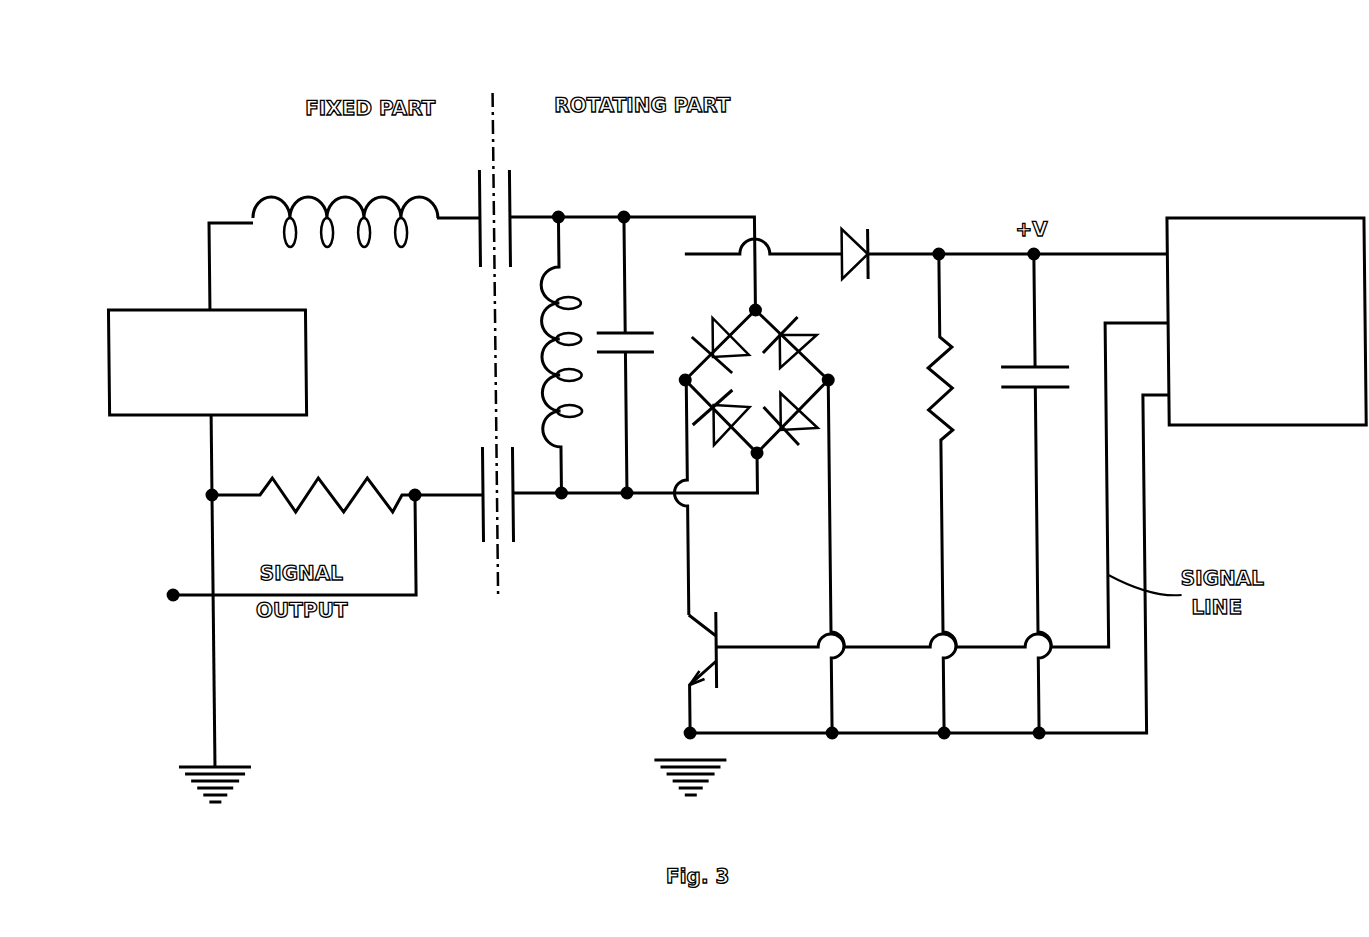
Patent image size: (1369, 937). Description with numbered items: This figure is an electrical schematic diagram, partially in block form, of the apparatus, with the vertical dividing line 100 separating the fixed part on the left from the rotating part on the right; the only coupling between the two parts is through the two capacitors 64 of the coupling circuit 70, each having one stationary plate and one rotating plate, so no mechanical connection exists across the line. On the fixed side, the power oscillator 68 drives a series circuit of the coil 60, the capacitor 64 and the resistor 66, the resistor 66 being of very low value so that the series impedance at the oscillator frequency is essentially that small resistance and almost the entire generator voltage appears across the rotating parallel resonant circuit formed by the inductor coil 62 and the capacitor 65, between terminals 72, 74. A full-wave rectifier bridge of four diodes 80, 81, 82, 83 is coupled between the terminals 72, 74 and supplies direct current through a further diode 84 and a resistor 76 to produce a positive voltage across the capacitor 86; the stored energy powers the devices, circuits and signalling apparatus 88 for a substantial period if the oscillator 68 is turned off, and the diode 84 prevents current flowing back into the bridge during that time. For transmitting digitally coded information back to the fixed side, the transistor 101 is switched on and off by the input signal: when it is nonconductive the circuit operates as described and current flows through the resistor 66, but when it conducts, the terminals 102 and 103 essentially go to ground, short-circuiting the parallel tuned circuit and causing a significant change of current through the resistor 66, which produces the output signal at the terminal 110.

The coil 60 is at (331, 197).
The coil 62 is at (568, 300).
The capacitor 64 is at (481, 190).
The capacitor 65 is at (633, 333).
The resistor 66 is at (313, 505).
The power oscillator 68 is at (169, 310).
The coupling circuit 70 is at (505, 122).
The terminal 72 is at (761, 308).
The terminal 74 is at (762, 455).
The resistor 76 is at (931, 494).
The diode 80 is at (813, 347).
The diode 81 is at (716, 322).
The diode 82 is at (821, 426).
The diode 83 is at (715, 446).
The diode 84 is at (849, 230).
The capacitor 86 is at (1048, 362).
The devices, circuits and signalling apparatus 88 is at (1246, 218).
The vertical dividing line 100 is at (497, 568).
The transistor 101 is at (742, 676).
The terminal 102 is at (684, 382).
The terminal 103 is at (832, 378).
The terminal 110 is at (170, 594).